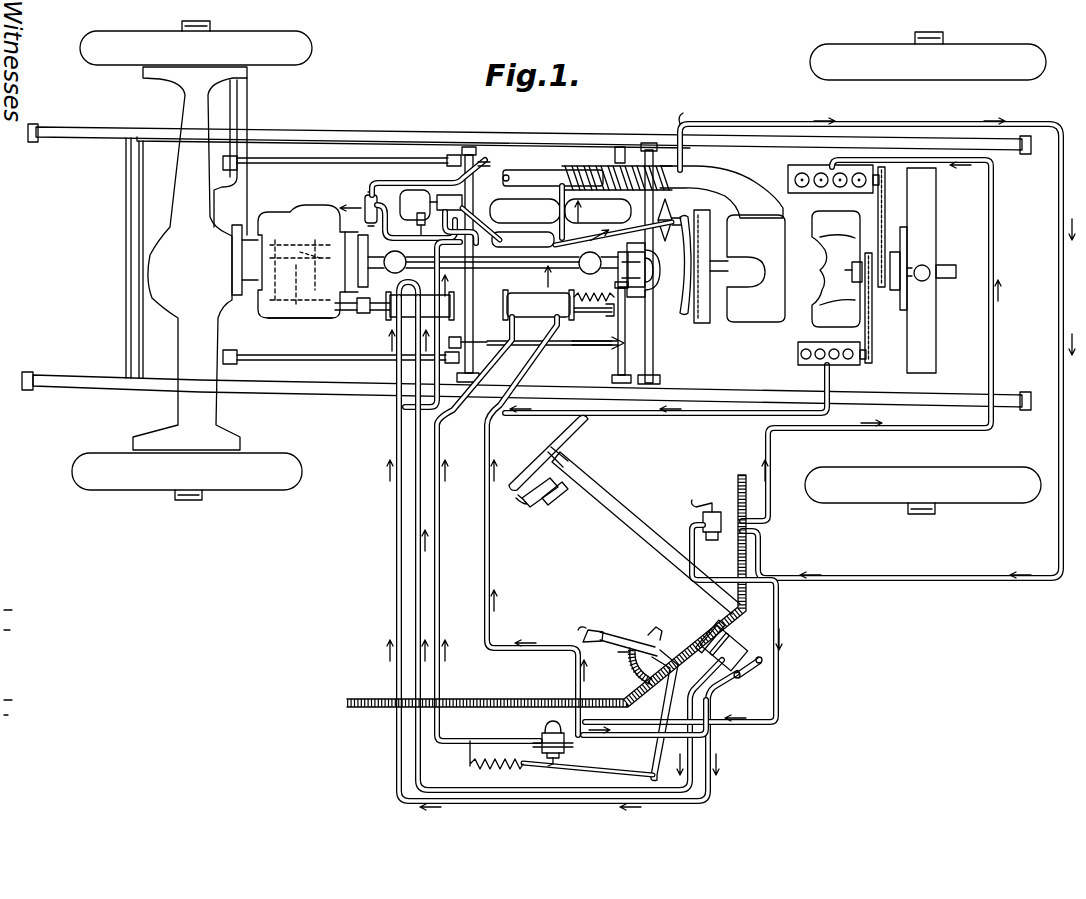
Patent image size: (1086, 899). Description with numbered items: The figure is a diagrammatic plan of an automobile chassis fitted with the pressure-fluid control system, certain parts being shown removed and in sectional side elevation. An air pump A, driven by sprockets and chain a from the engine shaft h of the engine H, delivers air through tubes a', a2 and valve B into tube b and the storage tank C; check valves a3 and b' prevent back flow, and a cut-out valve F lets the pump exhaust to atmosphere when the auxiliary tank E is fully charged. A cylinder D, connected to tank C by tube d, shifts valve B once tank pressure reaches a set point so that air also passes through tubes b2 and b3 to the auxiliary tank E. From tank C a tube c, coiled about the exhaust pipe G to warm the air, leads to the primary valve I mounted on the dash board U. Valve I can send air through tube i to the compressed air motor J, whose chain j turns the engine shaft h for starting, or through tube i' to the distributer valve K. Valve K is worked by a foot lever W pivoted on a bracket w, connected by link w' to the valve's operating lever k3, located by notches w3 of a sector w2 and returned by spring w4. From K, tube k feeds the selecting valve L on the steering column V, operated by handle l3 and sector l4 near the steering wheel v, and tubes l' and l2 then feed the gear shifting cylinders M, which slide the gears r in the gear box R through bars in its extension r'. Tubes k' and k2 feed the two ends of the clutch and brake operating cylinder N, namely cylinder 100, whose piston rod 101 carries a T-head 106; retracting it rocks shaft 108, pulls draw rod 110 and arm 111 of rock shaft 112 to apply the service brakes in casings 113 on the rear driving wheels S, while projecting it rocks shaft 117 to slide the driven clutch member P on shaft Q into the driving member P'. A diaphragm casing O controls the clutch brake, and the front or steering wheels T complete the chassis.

The rear driving wheels S is at (266, 462).
The brake casings 113 is at (147, 443).
The front or steering wheels T is at (942, 457).
The gear box or casing R is at (300, 261).
The change-of-speed and reversing gears r is at (309, 250).
The extension of gear box r' is at (300, 326).
The driving shaft Q is at (510, 268).
The diaphragm casing O is at (672, 210).
The driven clutch member P is at (677, 267).
The driving clutch member P' is at (711, 278).
The engine H is at (793, 269).
The engine shaft h is at (848, 270).
The exhaust pipe G is at (533, 173).
The rock shaft 112 is at (473, 302).
The rock shaft 117 is at (648, 337).
The T-head 106 is at (614, 318).
The clutch and brake operating cylinder N is at (538, 305).
The cylinder 100 is at (552, 298).
The piston rod 101 is at (598, 310).
The rock shaft 108 is at (610, 338).
The draw rod 110 is at (500, 335).
The arm 111 is at (457, 332).
The cut-out valve F is at (365, 200).
The tube b2 is at (428, 180).
The tube b3 is at (486, 165).
The valve B is at (418, 203).
The cylinder D is at (449, 203).
The tube a2 is at (416, 220).
The check valve a3 is at (416, 232).
The check valve b' is at (454, 227).
The tube b is at (432, 324).
The tube d is at (525, 211).
The auxiliary storage tank E is at (598, 211).
The pressure fluid storage tank C is at (567, 227).
The tube c is at (893, 576).
The gear shifting cylinders M is at (420, 301).
The tube l2 is at (711, 792).
The tube l' is at (570, 543).
The tube k2 is at (440, 580).
The tube k' is at (532, 526).
The tube a' is at (676, 396).
The compressed air motor J is at (788, 180).
The air pump A is at (798, 354).
The sprockets and chain a is at (874, 308).
The chain j is at (885, 203).
The tube i is at (873, 340).
The dash board U is at (738, 478).
The primary valve I is at (702, 518).
The tube i' is at (689, 623).
The steering column V is at (613, 495).
The steering wheel v is at (584, 428).
The handle l3 is at (535, 509).
The sector l4 is at (557, 507).
The selecting valve L is at (730, 665).
The lever W is at (617, 637).
The bracket w is at (655, 632).
The link w' is at (600, 715).
The sector w2 is at (628, 670).
The notches w3 is at (615, 655).
The spring w4 is at (496, 761).
The distributer valve K is at (546, 737).
The tube k is at (644, 726).
The operating lever k3 is at (556, 766).